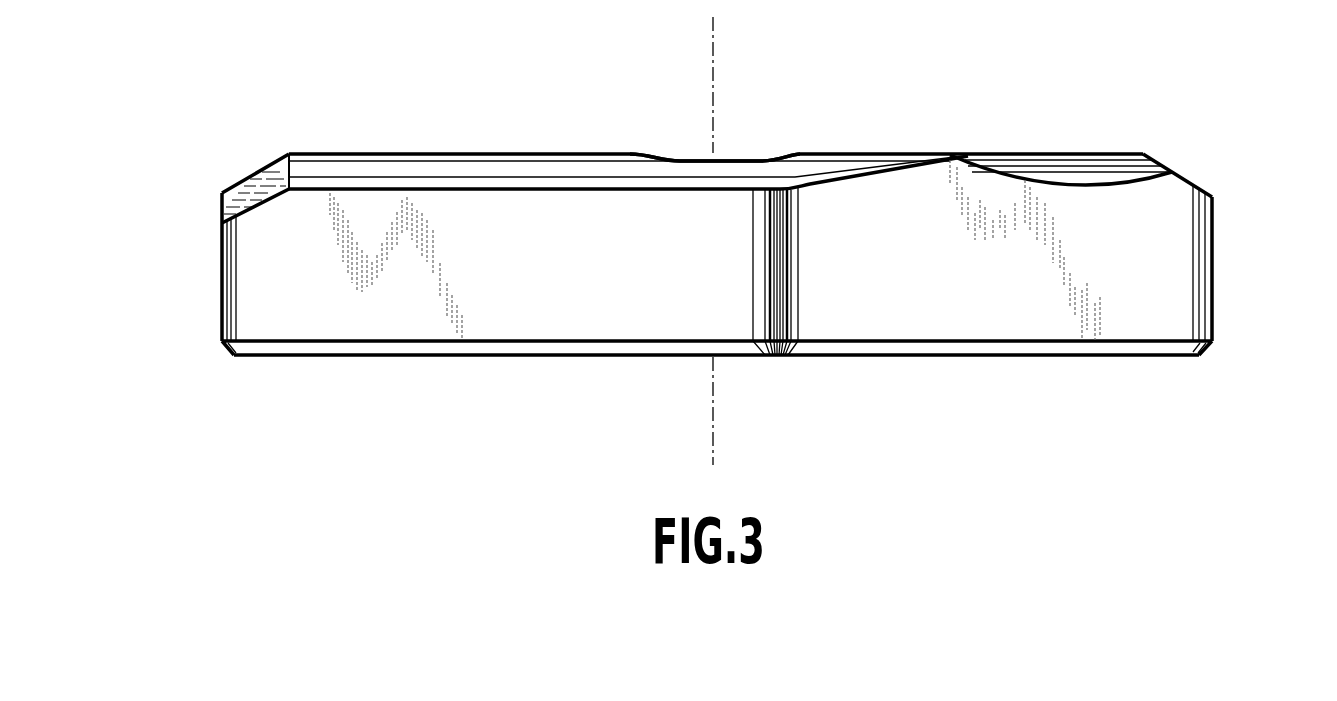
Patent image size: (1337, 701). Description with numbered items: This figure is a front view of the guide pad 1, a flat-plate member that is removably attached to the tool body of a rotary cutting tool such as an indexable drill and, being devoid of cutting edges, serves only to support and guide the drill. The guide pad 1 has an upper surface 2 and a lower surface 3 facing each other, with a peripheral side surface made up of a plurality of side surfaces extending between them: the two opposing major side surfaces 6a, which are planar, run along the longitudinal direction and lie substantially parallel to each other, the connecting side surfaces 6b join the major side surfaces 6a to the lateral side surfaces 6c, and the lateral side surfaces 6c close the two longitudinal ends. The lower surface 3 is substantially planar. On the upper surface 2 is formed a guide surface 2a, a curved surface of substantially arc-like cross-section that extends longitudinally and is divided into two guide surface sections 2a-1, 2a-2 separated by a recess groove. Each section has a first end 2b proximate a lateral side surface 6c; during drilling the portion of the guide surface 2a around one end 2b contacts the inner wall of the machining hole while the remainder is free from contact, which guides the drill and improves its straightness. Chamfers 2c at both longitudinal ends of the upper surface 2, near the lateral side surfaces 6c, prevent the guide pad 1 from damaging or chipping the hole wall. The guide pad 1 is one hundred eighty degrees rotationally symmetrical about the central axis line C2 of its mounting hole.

The guide pad 1 is at (721, 241).
The upper surface 2 is at (741, 138).
The guide surface 2a is at (512, 153).
The guide surface section 2a-1 is at (589, 151).
The guide surface section 2a-2 is at (1093, 152).
The first end 2b is at (322, 152).
The chamfer 2c is at (256, 158).
The lower surface 3 is at (983, 357).
The major side surface 6a is at (530, 325).
The connecting side surface 6b is at (1058, 322).
The lateral side surface 6c is at (222, 272).
The central axis line C2 is at (718, 62).